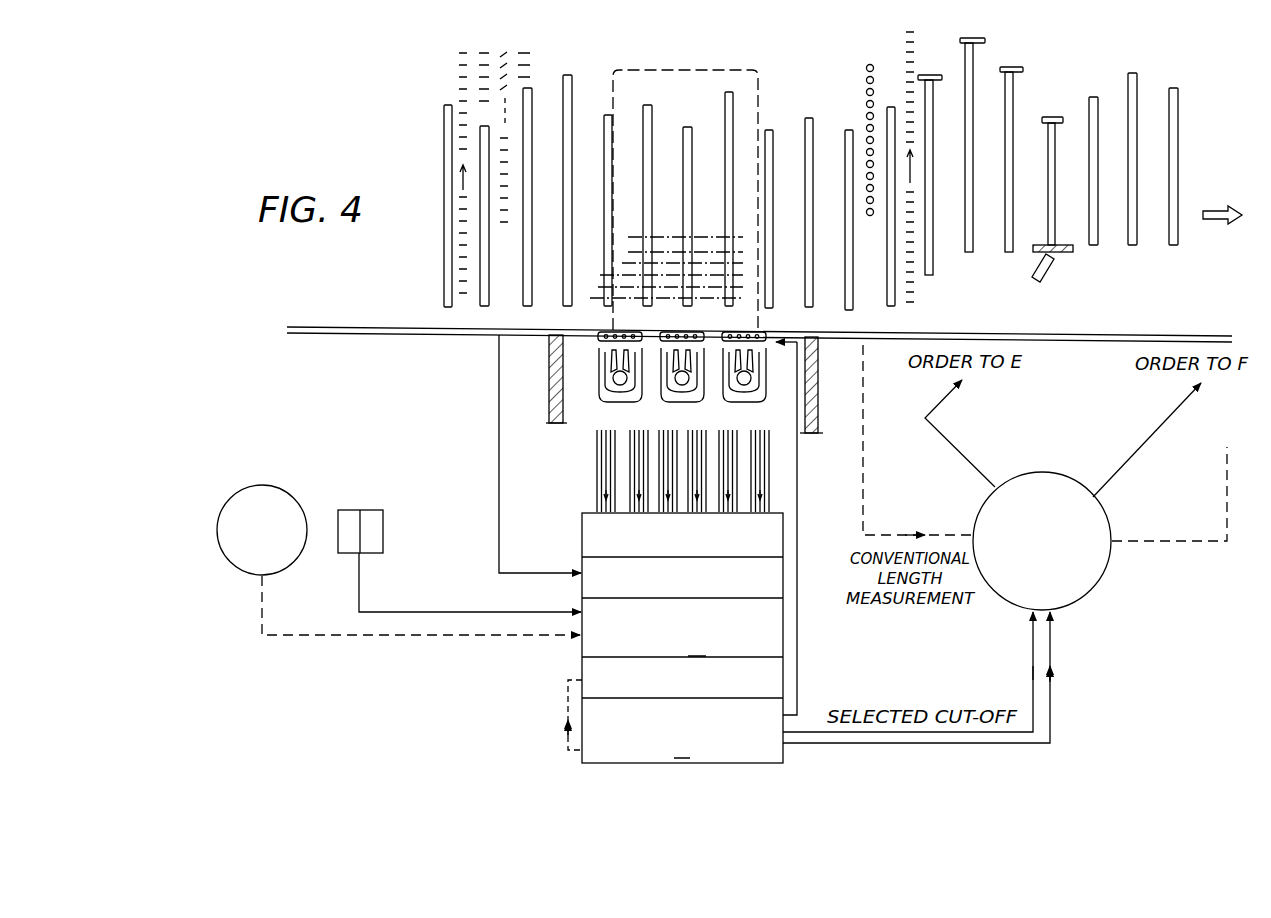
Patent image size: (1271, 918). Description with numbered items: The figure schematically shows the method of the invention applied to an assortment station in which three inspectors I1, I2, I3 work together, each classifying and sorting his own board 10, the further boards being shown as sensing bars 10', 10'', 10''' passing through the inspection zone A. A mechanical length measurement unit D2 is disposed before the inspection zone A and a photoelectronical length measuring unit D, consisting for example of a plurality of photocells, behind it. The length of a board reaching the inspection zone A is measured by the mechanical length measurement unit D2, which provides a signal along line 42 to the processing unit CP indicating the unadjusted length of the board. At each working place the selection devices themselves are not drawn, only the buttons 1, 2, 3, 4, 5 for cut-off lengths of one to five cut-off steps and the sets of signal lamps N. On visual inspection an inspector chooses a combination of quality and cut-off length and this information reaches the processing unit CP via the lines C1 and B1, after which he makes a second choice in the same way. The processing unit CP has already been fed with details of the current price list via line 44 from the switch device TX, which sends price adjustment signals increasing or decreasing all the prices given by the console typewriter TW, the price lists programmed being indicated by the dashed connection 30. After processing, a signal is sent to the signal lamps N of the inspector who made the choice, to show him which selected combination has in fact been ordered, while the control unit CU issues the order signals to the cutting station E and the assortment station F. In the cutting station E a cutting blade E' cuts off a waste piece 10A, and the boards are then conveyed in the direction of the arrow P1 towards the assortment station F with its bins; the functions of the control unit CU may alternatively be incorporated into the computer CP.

The board 10 is at (595, 218).
The sensor bar 10' is at (636, 198).
The sensor bar 10'' is at (684, 199).
The sensor bar 10''' is at (715, 199).
The button 1 is at (590, 298).
The button 2 is at (600, 275).
The button 3 is at (622, 263).
The button 4 is at (665, 252).
The button 5 is at (629, 237).
The inspection zone A is at (683, 70).
The set of signal lamps N is at (631, 332).
The inspector I1 is at (612, 423).
The inspector I2 is at (674, 423).
The inspector I3 is at (736, 423).
The line C1 is at (637, 470).
The line B1 is at (640, 478).
The photoelectronical length measuring unit D is at (868, 228).
The mechanical length measurement unit D2 is at (505, 228).
The cutting station E is at (1009, 49).
The cutting blade E' is at (1055, 184).
The waste piece 10A is at (1052, 258).
The assortment station F is at (1222, 204).
The arrow P1 is at (1227, 241).
The line 42 is at (498, 438).
The line 44 is at (445, 610).
The programmed price lists line 30 is at (421, 620).
The console typewriter TW is at (262, 530).
The switch device TX is at (383, 524).
The processing unit CP is at (784, 648).
The control unit CU is at (1042, 541).